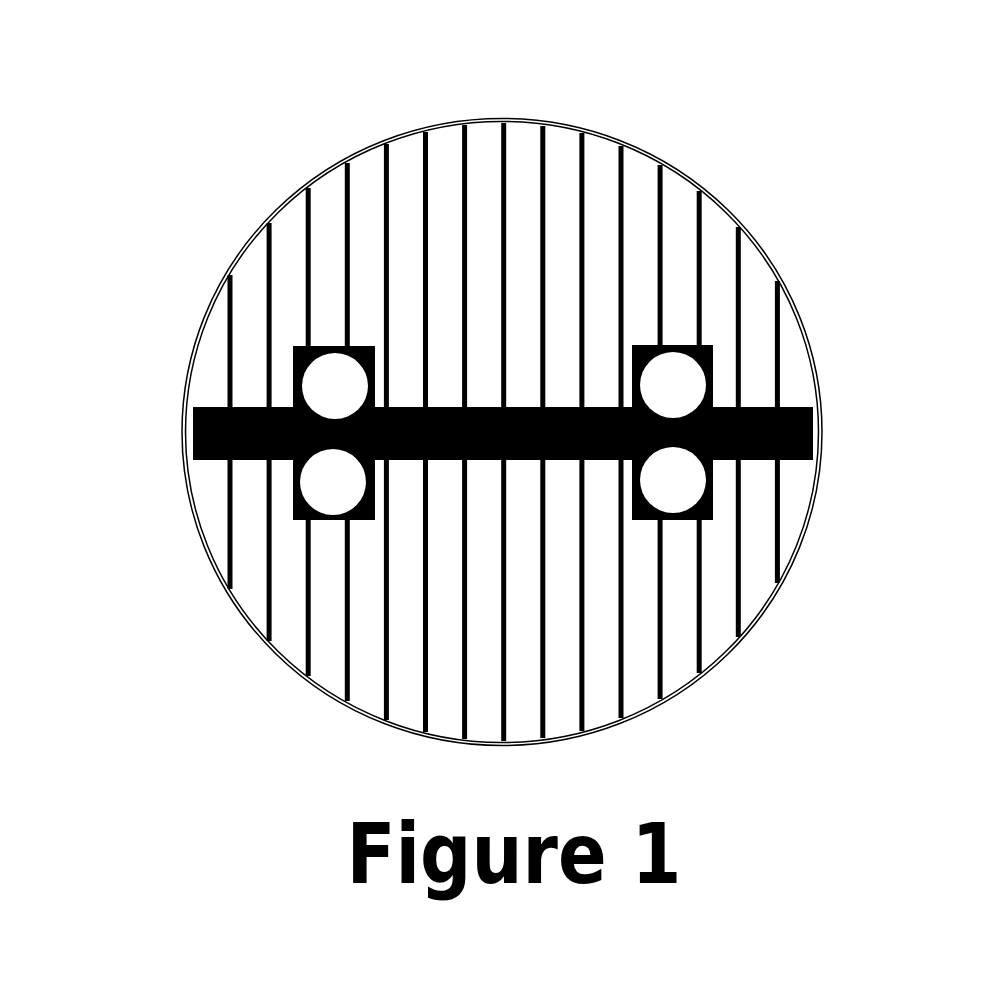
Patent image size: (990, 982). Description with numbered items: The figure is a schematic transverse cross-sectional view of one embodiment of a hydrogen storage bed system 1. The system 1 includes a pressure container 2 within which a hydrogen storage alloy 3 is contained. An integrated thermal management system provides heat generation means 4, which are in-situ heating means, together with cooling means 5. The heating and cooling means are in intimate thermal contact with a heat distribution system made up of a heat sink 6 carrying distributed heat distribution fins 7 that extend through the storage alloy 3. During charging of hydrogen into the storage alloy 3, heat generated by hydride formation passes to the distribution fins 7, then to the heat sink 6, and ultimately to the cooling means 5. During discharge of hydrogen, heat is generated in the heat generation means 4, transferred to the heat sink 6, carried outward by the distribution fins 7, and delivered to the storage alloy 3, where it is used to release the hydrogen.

The hydrogen storage bed system 1 is at (662, 718).
The pressure container 2 is at (273, 218).
The hydrogen storage alloy 3 is at (597, 197).
The heat generation means 4 is at (338, 393).
The cooling means 5 is at (338, 473).
The heat sink 6 is at (813, 437).
The heat distribution fins 7 is at (498, 163).